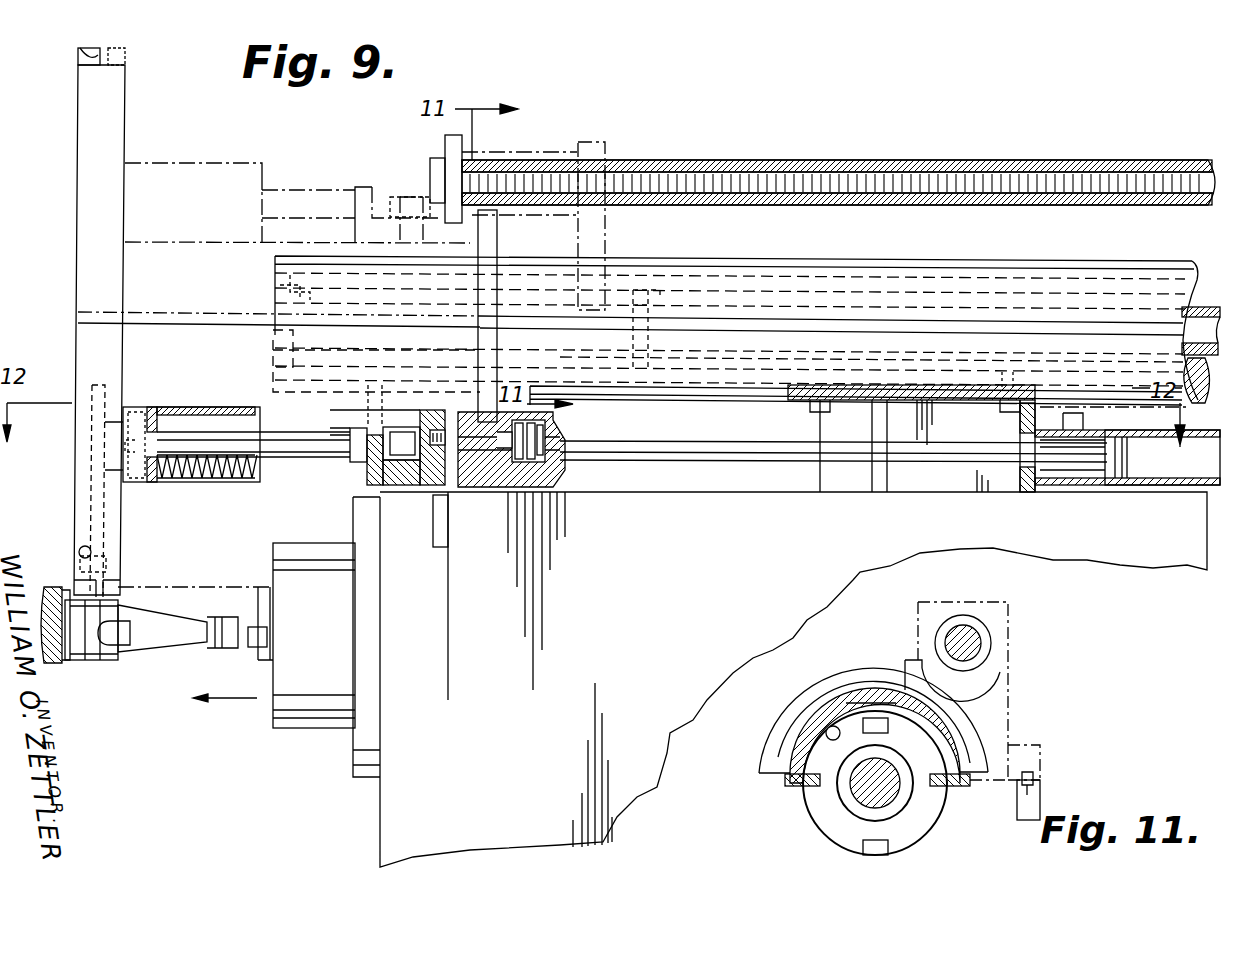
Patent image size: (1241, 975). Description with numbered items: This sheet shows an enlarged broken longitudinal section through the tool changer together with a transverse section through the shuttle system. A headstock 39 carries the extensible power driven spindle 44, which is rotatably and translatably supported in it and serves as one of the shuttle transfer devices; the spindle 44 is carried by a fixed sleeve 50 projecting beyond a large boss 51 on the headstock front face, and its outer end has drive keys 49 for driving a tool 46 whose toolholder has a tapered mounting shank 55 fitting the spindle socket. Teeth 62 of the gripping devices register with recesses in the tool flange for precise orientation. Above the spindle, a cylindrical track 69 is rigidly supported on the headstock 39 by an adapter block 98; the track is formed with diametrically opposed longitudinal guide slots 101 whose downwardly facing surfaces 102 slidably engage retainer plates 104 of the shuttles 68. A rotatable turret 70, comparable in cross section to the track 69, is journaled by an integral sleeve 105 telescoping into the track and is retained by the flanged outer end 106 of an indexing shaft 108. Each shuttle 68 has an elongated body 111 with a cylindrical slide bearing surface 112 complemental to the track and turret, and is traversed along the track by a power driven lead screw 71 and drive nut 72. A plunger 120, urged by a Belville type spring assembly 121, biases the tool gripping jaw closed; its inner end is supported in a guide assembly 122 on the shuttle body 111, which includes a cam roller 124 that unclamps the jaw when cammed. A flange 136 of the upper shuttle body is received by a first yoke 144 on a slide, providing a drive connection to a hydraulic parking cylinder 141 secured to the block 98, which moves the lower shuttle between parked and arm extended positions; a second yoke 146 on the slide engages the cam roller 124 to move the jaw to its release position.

In FIG. 11, the headstock 39 is at (707, 695).
In FIG. 9, the spindle 44 is at (262, 587).
In FIG. 9, the tool 46 is at (50, 590).
In FIG. 9, the drive keys 49 is at (252, 627).
In FIG. 9, the fixed sleeve 50 is at (290, 548).
In FIG. 9, the boss 51 is at (385, 805).
In FIG. 9, the tapered mounting shank 55 is at (137, 660).
In FIG. 9, the teeth 62 is at (80, 50).
In FIG. 9, the shuttles 68 is at (85, 118).
In FIG. 11, the shuttles 68 is at (765, 773).
In FIG. 9, the cylindrical track 69 is at (790, 275).
In FIG. 11, the cylindrical track 69 is at (833, 827).
In FIG. 9, the rotatable turret 70 is at (277, 275).
In FIG. 9, the lead screw 71 is at (700, 185).
In FIG. 11, the lead screw 71 is at (985, 650).
In FIG. 9, the drive nut 72 is at (592, 142).
In FIG. 11, the drive nut 72 is at (1010, 690).
In FIG. 9, the adapter block 98 is at (960, 397).
In FIG. 9, the guide slots 101 is at (675, 330).
In FIG. 9, the downwardly facing surfaces 102 is at (840, 322).
In FIG. 11, the retainer plates 104 is at (790, 788).
In FIG. 9, the sleeve 105 is at (615, 285).
In FIG. 9, the flanged outer end 106 is at (270, 353).
In FIG. 9, the indexing shaft 108 is at (1200, 310).
In FIG. 11, the indexing shaft 108 is at (883, 803).
In FIG. 11, the shuttle body 111 is at (830, 705).
In FIG. 11, the slide bearing surface 112 is at (832, 727).
In FIG. 9, the plunger 120 is at (310, 190).
In FIG. 9, the spring assembly 121 is at (160, 470).
In FIG. 9, the guide assembly 122 is at (362, 187).
In FIG. 9, the cam roller 124 is at (400, 197).
In FIG. 9, the flange 136 is at (478, 368).
In FIG. 9, the hydraulic cylinder 141 is at (1150, 485).
In FIG. 9, the first yoke 144 is at (485, 487).
In FIG. 9, the second yoke 146 is at (415, 485).